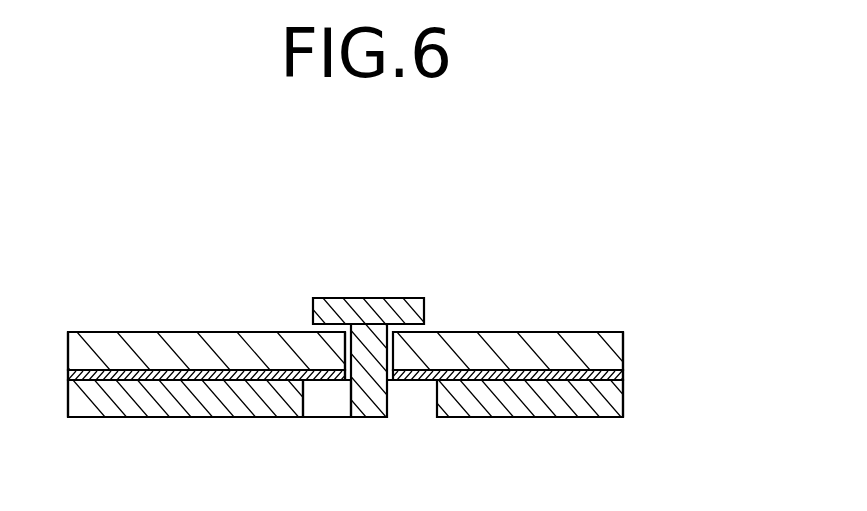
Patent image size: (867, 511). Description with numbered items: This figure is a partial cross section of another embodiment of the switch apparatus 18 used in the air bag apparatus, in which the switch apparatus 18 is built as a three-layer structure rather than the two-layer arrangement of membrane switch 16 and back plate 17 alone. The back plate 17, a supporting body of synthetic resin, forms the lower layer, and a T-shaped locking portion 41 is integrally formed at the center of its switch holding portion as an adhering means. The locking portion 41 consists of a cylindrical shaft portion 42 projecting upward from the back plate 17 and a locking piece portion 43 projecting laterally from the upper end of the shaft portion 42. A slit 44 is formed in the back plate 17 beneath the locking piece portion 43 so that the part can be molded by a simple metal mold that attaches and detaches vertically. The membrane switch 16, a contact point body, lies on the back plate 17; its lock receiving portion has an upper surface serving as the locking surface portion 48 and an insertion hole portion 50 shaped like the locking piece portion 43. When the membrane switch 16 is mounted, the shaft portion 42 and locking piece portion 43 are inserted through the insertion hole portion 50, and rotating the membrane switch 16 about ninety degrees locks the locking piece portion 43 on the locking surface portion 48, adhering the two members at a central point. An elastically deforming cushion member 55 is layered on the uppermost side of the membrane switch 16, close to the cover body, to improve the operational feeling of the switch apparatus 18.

The membrane switch 16 is at (623, 371).
The back plate 17 is at (594, 400).
The switch apparatus 18 is at (647, 245).
The locking portion 41 is at (374, 278).
The shaft portion 42 is at (370, 311).
The locking piece portion 43 is at (410, 298).
The slit 44 is at (330, 400).
The locking surface portion 48 is at (325, 312).
The insertion hole portion 50 is at (345, 347).
The cushion member 55 is at (568, 340).